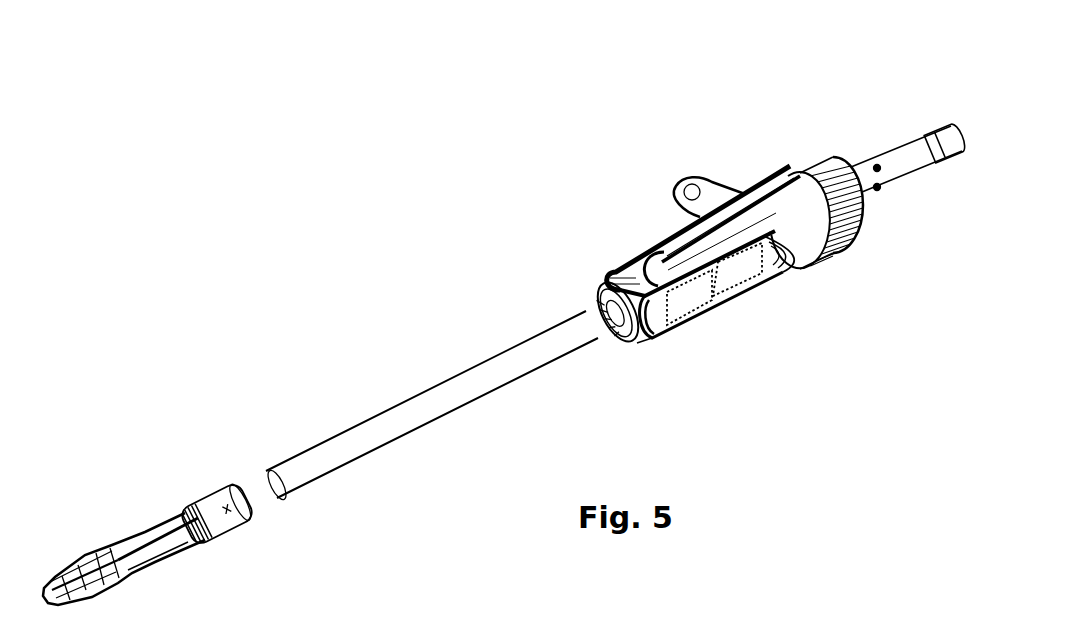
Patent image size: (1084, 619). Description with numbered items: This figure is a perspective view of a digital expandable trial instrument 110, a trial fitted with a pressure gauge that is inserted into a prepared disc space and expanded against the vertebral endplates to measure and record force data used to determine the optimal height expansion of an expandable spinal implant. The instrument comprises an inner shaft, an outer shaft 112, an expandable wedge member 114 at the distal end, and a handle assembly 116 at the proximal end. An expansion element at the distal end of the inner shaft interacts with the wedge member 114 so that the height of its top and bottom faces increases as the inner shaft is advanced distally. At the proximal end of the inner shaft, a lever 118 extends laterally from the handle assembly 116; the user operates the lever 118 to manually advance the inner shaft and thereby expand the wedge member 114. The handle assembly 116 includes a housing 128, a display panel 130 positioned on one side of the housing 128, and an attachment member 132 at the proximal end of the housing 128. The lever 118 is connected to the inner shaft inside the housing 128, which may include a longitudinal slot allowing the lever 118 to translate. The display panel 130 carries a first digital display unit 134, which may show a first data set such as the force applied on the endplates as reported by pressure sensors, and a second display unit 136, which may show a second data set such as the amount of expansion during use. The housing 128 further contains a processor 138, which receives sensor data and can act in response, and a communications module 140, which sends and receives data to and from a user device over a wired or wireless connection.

The digital expandable trial instrument 110 is at (325, 185).
The outer shaft 112 is at (392, 408).
The expandable wedge member 114 is at (80, 547).
The handle assembly 116 is at (763, 130).
The lever 118 is at (692, 184).
The housing 128 is at (637, 343).
The display panel 130 is at (623, 272).
The attachment member 132 is at (908, 145).
The first digital display unit 134 is at (672, 244).
The second display unit 136 is at (692, 224).
The processor 138 is at (690, 302).
The communications module 140 is at (738, 275).